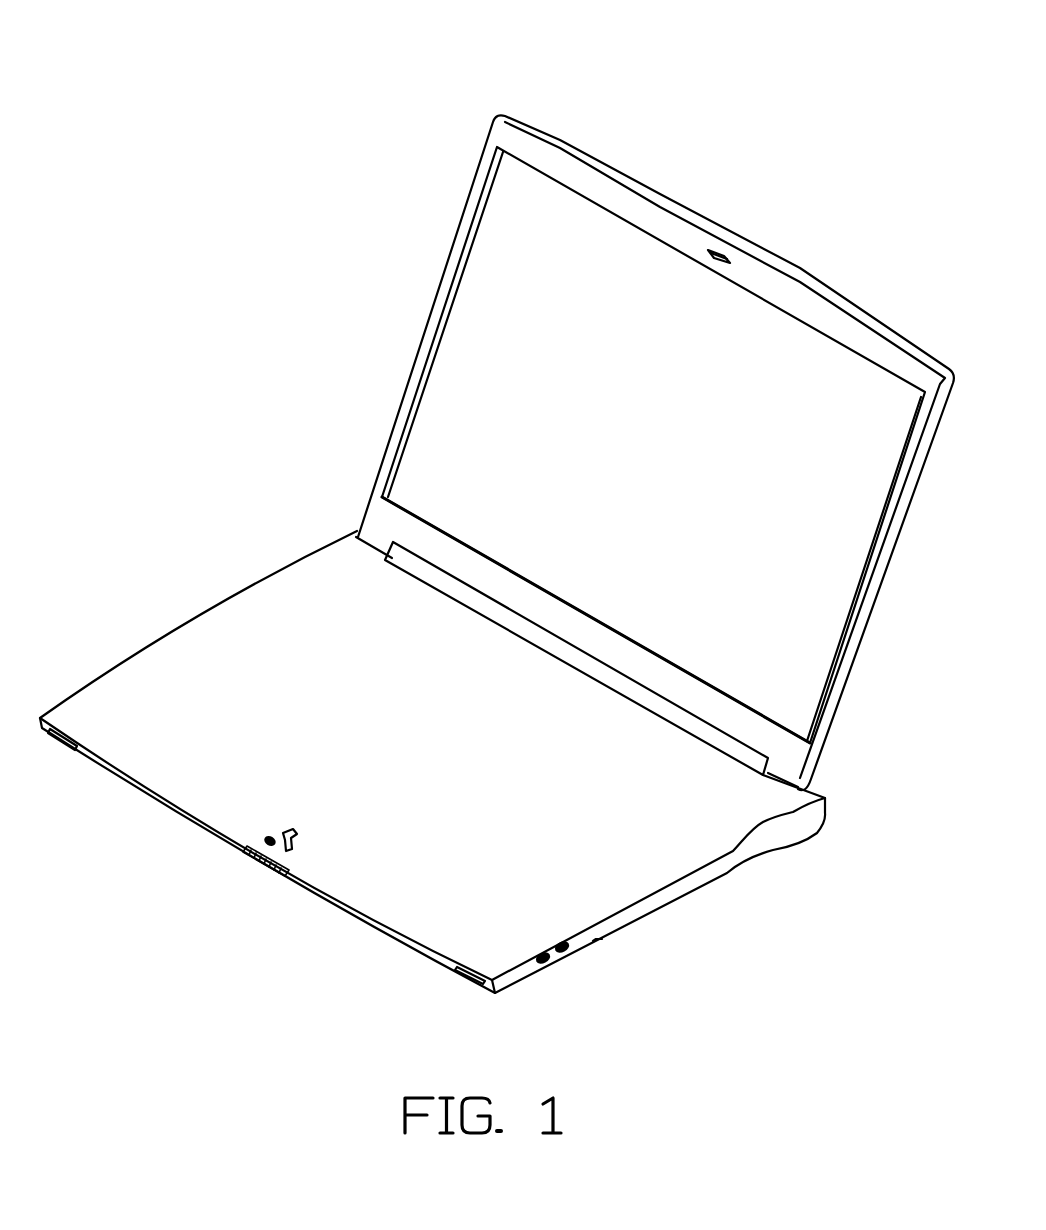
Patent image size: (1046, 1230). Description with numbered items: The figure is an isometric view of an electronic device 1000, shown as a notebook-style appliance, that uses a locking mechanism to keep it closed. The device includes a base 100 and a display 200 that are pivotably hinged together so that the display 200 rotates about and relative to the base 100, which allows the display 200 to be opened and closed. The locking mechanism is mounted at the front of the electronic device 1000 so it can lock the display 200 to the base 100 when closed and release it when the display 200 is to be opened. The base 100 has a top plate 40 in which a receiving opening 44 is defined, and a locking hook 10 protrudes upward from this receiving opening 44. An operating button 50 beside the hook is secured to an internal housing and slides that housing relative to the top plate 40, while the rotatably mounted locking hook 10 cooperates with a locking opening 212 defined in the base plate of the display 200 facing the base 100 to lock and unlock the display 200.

The electronic device 1000 is at (497, 515).
The display 200 is at (428, 250).
The locking opening 212 is at (722, 251).
The base 100 is at (212, 586).
The locking hook 10 is at (280, 833).
The receiving opening 44 is at (272, 842).
The operating button 50 is at (261, 866).
The top plate 40 is at (597, 852).